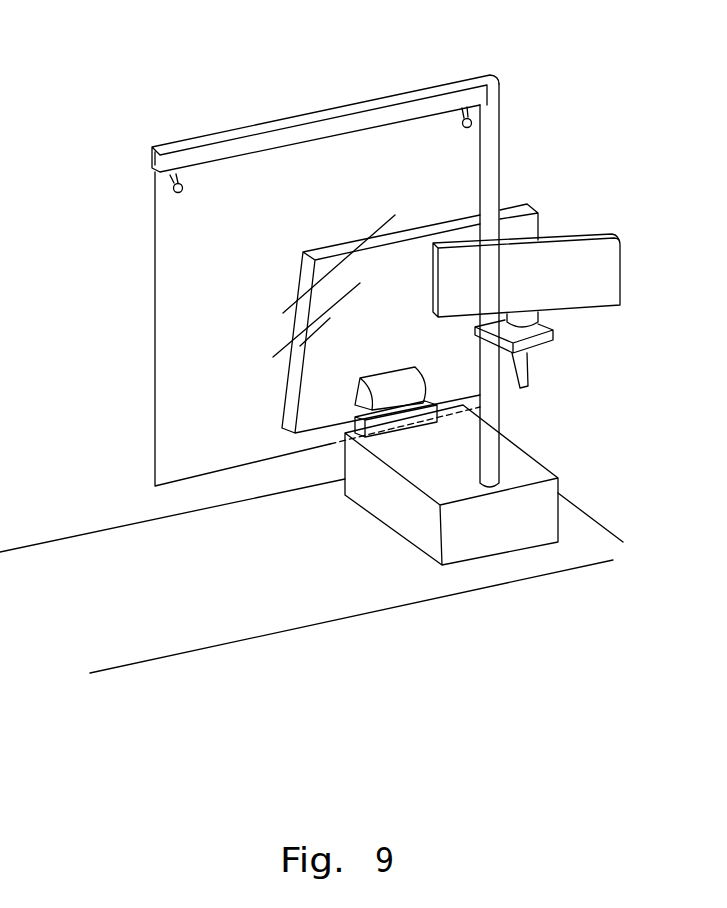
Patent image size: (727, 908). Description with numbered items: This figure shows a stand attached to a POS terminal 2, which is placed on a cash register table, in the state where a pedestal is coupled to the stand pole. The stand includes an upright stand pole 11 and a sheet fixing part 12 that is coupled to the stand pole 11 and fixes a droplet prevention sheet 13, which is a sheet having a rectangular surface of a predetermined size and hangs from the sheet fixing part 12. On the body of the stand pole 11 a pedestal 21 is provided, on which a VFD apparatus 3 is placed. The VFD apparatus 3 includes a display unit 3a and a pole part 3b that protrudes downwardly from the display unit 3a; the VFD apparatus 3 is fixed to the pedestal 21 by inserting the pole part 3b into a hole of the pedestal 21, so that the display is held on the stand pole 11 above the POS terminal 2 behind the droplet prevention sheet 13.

The POS terminal 2 is at (458, 532).
The VFD apparatus 3 is at (550, 291).
The display unit 3a is at (577, 287).
The pole part 3b is at (528, 318).
The stand pole 11 is at (490, 177).
The sheet fixing part 12 is at (345, 122).
The droplet prevention sheet 13 is at (180, 280).
The pedestal 21 is at (540, 340).